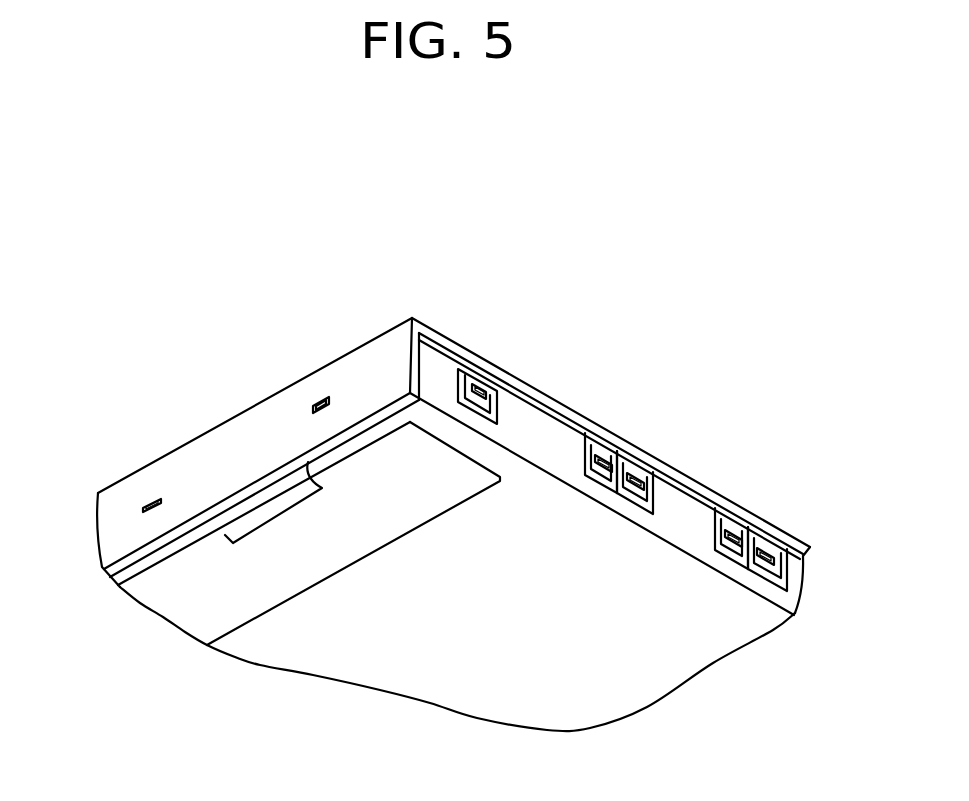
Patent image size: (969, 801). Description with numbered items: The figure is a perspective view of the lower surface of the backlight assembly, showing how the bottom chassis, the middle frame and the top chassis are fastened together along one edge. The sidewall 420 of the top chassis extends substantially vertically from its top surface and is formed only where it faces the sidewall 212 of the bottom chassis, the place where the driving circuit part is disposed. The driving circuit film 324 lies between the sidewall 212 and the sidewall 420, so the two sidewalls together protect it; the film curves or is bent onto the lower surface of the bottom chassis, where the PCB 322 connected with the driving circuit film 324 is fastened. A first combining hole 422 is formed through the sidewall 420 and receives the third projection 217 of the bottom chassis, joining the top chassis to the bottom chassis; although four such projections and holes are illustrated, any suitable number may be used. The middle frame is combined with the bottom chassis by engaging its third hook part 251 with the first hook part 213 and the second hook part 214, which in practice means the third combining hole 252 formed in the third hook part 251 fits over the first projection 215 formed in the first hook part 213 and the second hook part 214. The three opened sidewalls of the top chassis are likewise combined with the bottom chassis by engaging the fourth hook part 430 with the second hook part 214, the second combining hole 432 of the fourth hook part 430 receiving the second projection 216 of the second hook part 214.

The sidewall 212 is at (687, 528).
The first hook part 213 is at (475, 386).
The second hook part 214 is at (590, 445).
The first projection 215 is at (478, 388).
The second projection 216 is at (597, 462).
The third projection 217 is at (313, 401).
The third hook part 251 is at (490, 405).
The third combining hole 252 is at (488, 396).
The PCB 322 is at (205, 571).
The driving circuit film 324 is at (240, 522).
The sidewall 420 is at (243, 428).
The first combining hole 422 is at (311, 407).
The fourth hook part 430 is at (613, 482).
The second combining hole 432 is at (620, 462).